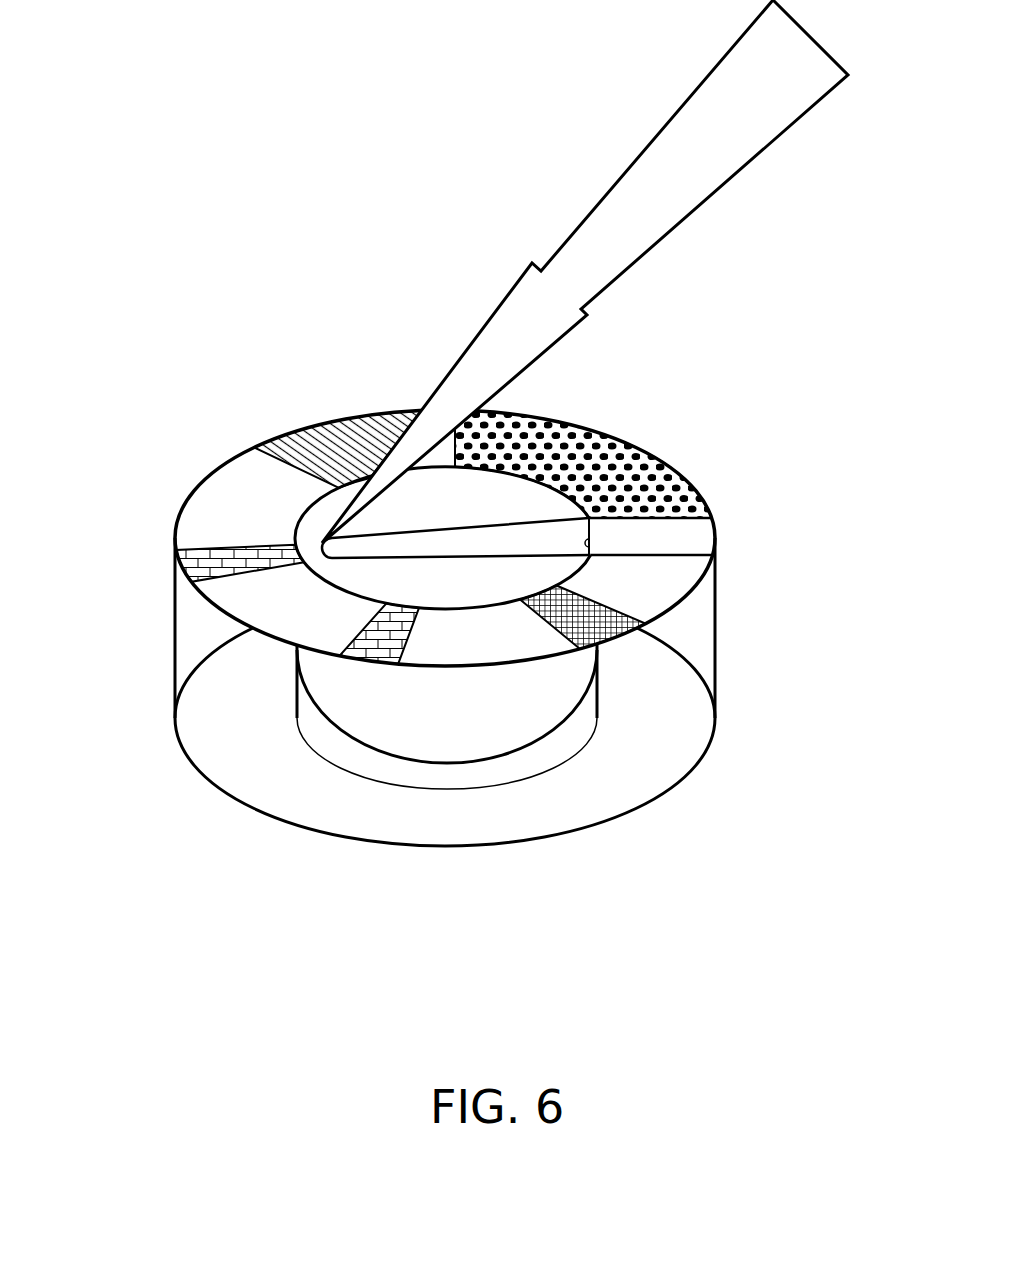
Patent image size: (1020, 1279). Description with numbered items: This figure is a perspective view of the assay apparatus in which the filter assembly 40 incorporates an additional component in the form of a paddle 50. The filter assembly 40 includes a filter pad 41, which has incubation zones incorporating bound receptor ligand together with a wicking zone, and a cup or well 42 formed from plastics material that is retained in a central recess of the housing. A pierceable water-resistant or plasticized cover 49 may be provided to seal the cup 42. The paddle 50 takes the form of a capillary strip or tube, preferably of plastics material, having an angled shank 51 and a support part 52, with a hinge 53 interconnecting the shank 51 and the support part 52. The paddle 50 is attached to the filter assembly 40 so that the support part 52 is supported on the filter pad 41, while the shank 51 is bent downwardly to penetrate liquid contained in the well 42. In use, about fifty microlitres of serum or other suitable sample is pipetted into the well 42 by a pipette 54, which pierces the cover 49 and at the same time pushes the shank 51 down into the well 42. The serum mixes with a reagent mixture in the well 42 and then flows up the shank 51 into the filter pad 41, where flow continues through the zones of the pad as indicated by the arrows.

The filter assembly 40 is at (650, 823).
The filter pad 41 is at (643, 452).
The cup 42 is at (482, 718).
The cover 49 is at (370, 578).
The paddle 50 is at (747, 472).
The shank 51 is at (456, 538).
The support part 52 is at (664, 552).
The hinge 53 is at (600, 557).
The pipette 54 is at (690, 173).